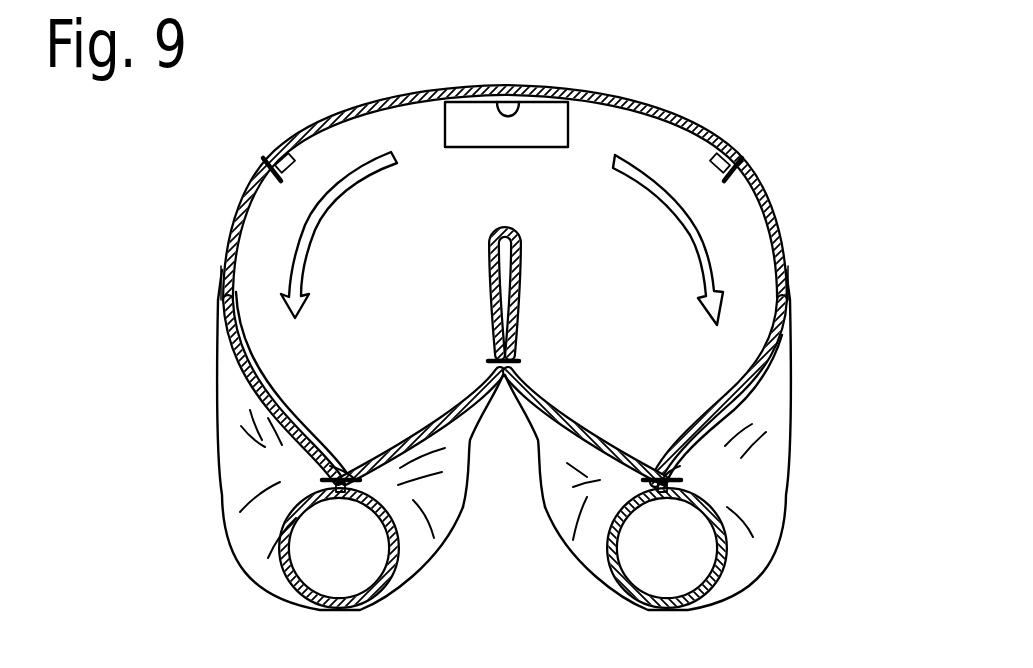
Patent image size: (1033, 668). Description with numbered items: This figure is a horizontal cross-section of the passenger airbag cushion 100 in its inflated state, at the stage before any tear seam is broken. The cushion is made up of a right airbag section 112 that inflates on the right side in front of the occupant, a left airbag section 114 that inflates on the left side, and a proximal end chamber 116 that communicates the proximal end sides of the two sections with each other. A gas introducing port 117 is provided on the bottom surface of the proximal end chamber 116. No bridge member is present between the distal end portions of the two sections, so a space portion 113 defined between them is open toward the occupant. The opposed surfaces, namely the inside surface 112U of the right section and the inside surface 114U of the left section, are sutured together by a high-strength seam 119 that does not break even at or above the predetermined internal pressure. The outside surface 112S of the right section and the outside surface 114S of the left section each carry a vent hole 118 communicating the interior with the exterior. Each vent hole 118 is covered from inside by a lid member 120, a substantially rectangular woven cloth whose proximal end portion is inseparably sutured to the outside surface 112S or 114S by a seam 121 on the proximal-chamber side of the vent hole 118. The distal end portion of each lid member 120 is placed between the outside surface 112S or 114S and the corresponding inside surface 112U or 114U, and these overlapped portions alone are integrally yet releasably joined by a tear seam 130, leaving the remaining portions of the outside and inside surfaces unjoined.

The passenger airbag cushion 100 is at (716, 70).
The right airbag section 112 is at (834, 520).
The outside surface of right airbag section 112S is at (762, 396).
The inside surface of right airbag section 112U is at (597, 387).
The space portion 113 is at (503, 521).
The left airbag section 114 is at (173, 507).
The outside surface of left airbag section 114S is at (245, 390).
The inside surface of left airbag section 114U is at (447, 410).
The proximal end chamber 116 is at (410, 98).
The gas introducing port 117 is at (521, 100).
The vent hole 118 is at (220, 270).
The seam 119 is at (517, 360).
The lid member 120 is at (272, 373).
The seam 121 is at (266, 165).
The tear seam 130 is at (323, 478).